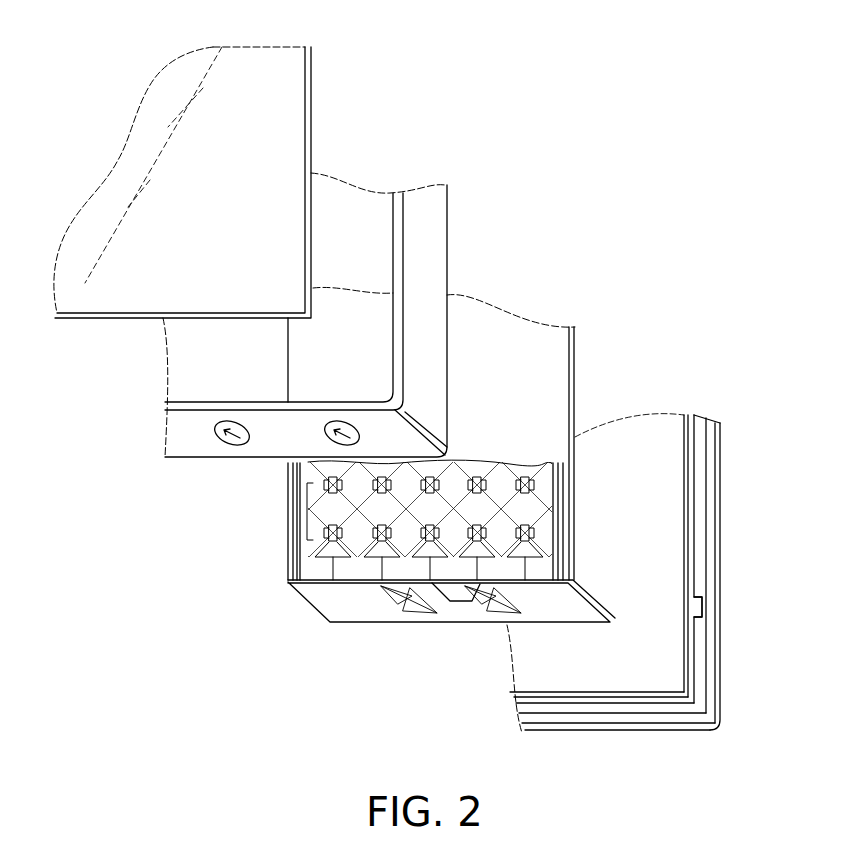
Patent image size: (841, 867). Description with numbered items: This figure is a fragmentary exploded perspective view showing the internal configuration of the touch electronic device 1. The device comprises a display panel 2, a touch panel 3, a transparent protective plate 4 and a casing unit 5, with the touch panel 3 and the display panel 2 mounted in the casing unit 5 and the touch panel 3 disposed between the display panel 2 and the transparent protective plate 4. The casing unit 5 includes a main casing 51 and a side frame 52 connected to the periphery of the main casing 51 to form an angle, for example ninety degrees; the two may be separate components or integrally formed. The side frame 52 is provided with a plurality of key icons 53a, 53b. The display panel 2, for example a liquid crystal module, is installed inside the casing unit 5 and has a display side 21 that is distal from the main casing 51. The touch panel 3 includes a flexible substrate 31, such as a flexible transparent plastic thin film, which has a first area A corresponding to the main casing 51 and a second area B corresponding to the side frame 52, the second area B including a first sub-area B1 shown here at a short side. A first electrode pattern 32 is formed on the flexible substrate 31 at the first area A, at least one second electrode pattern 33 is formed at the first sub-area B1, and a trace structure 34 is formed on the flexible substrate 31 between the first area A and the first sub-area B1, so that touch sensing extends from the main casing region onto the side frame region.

The touch electronic device 1 is at (427, 408).
The display panel 2 is at (634, 683).
The display side 21 is at (657, 643).
The touch panel 3 is at (527, 333).
The flexible substrate 31 is at (575, 456).
The first electrode pattern 32 is at (308, 509).
The second electrode pattern 33 is at (406, 626).
The trace structure 34 is at (288, 554).
The transparent protective plate 4 is at (258, 112).
The casing unit 5 is at (454, 451).
The main casing 51 is at (720, 652).
The side frame 52 is at (447, 218).
The key icon 53a is at (335, 426).
The key icon 53b is at (217, 430).
The first area A is at (542, 400).
The second area B is at (310, 613).
The first sub-area B1 is at (355, 608).